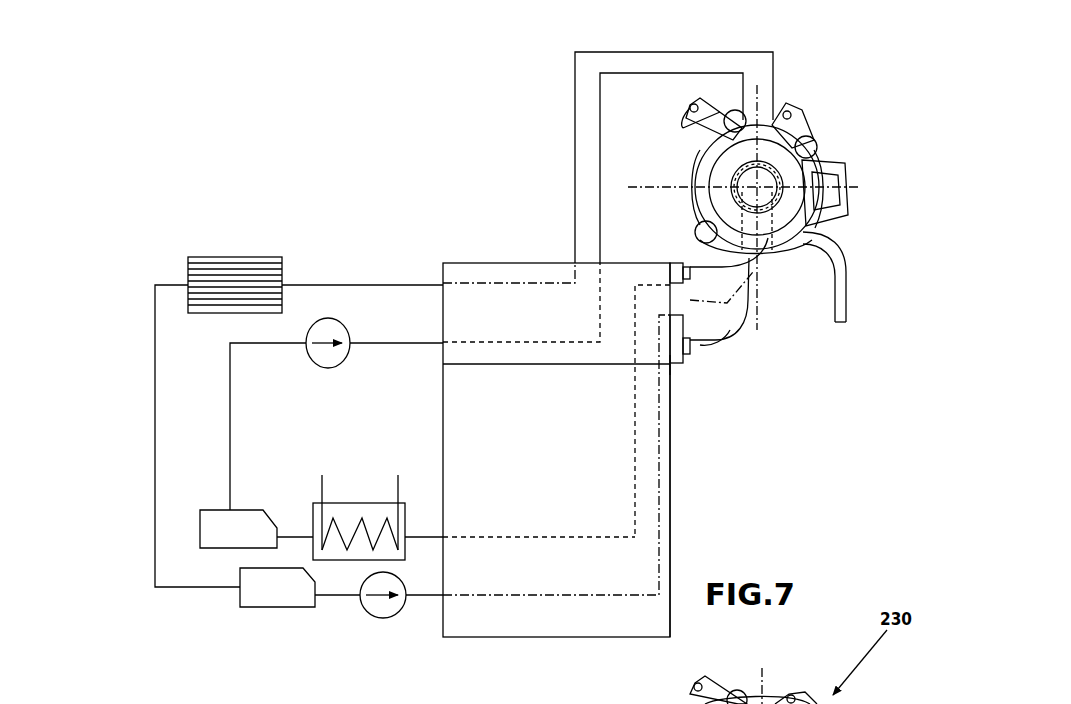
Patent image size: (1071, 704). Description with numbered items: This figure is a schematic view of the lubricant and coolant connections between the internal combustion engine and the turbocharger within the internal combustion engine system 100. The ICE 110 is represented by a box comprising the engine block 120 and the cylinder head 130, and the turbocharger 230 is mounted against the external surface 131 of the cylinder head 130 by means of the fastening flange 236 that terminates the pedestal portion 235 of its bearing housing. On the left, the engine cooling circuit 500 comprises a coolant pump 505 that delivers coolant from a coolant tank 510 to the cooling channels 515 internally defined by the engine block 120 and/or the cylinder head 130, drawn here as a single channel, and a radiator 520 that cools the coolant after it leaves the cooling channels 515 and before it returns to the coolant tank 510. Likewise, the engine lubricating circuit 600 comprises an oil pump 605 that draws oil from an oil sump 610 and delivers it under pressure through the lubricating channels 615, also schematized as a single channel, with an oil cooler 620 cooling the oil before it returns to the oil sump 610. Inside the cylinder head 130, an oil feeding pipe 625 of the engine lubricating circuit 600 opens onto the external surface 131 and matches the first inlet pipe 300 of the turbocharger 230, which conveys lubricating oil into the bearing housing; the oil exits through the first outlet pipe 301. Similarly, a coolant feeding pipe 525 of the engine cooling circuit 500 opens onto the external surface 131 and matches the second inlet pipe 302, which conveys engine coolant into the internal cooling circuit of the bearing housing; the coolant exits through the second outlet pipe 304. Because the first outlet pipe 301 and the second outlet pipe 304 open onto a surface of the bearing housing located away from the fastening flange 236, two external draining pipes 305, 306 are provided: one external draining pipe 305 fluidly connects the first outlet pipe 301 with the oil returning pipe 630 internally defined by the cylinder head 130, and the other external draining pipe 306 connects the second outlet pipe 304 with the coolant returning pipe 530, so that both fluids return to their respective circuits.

The internal combustion engine system 100 is at (177, 212).
The ICE 110 is at (465, 255).
The engine block 120 is at (667, 502).
The cylinder head 130 is at (448, 271).
The external surface 131 is at (673, 366).
The turbocharger 230 is at (828, 118).
The pedestal portion 235 is at (760, 298).
The fastening flange 236 is at (679, 266).
The first inlet pipe 300 is at (718, 275).
The first outlet pipe 301 is at (738, 158).
The second inlet pipe 302 is at (713, 313).
The second outlet pipe 304 is at (776, 158).
The external draining pipe 305 is at (693, 72).
The external draining pipe 306 is at (655, 50).
The engine cooling circuit 500 is at (147, 348).
The coolant pump 505 is at (375, 607).
The coolant tank 510 is at (262, 590).
The cooling channels 515 is at (497, 597).
The radiator 520 is at (220, 277).
The coolant feeding pipe 525 is at (691, 344).
The coolant returning pipe 530 is at (573, 281).
The engine lubricating circuit 600 is at (218, 432).
The oil pump 605 is at (327, 325).
The oil sump 610 is at (237, 522).
The lubricating channels 615 is at (498, 535).
The oil cooler 620 is at (352, 510).
The oil feeding pipe 625 is at (598, 312).
The oil returning pipe 630 is at (653, 286).